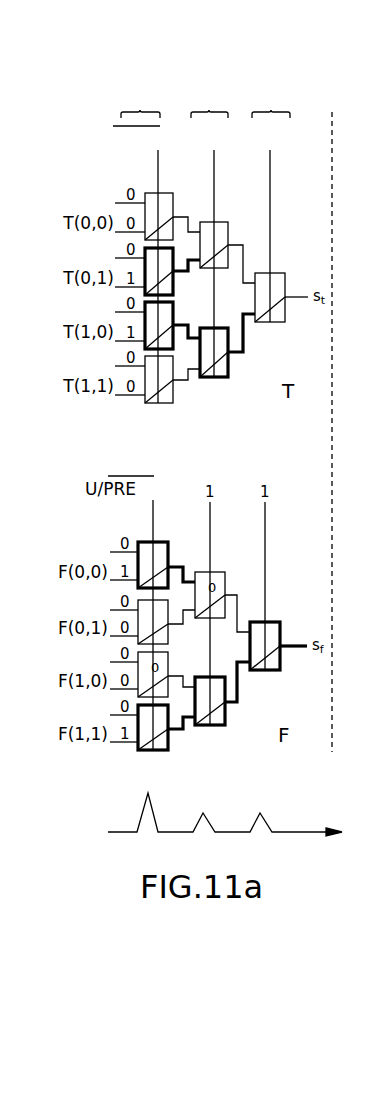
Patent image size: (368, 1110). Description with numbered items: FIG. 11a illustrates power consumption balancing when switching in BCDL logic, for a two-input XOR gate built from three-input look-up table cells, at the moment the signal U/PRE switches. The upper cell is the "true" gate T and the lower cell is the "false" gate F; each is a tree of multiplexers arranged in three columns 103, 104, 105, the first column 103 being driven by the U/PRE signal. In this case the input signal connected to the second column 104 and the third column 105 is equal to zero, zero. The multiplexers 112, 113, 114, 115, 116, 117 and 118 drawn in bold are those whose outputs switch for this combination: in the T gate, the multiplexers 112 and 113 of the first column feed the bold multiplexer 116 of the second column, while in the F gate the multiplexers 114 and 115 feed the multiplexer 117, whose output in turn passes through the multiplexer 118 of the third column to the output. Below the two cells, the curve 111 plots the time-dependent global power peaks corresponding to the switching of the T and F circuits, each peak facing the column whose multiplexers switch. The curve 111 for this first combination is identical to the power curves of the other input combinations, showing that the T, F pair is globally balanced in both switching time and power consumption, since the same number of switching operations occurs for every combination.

The first column of multiplexers 103 is at (140, 110).
The second column of multiplexers 104 is at (209, 110).
The third column of multiplexers 105 is at (271, 110).
The power curve 111 is at (318, 830).
The multiplexer 112 is at (175, 283).
The multiplexer 113 is at (143, 318).
The multiplexer 114 is at (170, 545).
The multiplexer 115 is at (150, 752).
The multiplexer 116 is at (215, 378).
The multiplexer 117 is at (207, 726).
The multiplexer 118 is at (280, 626).